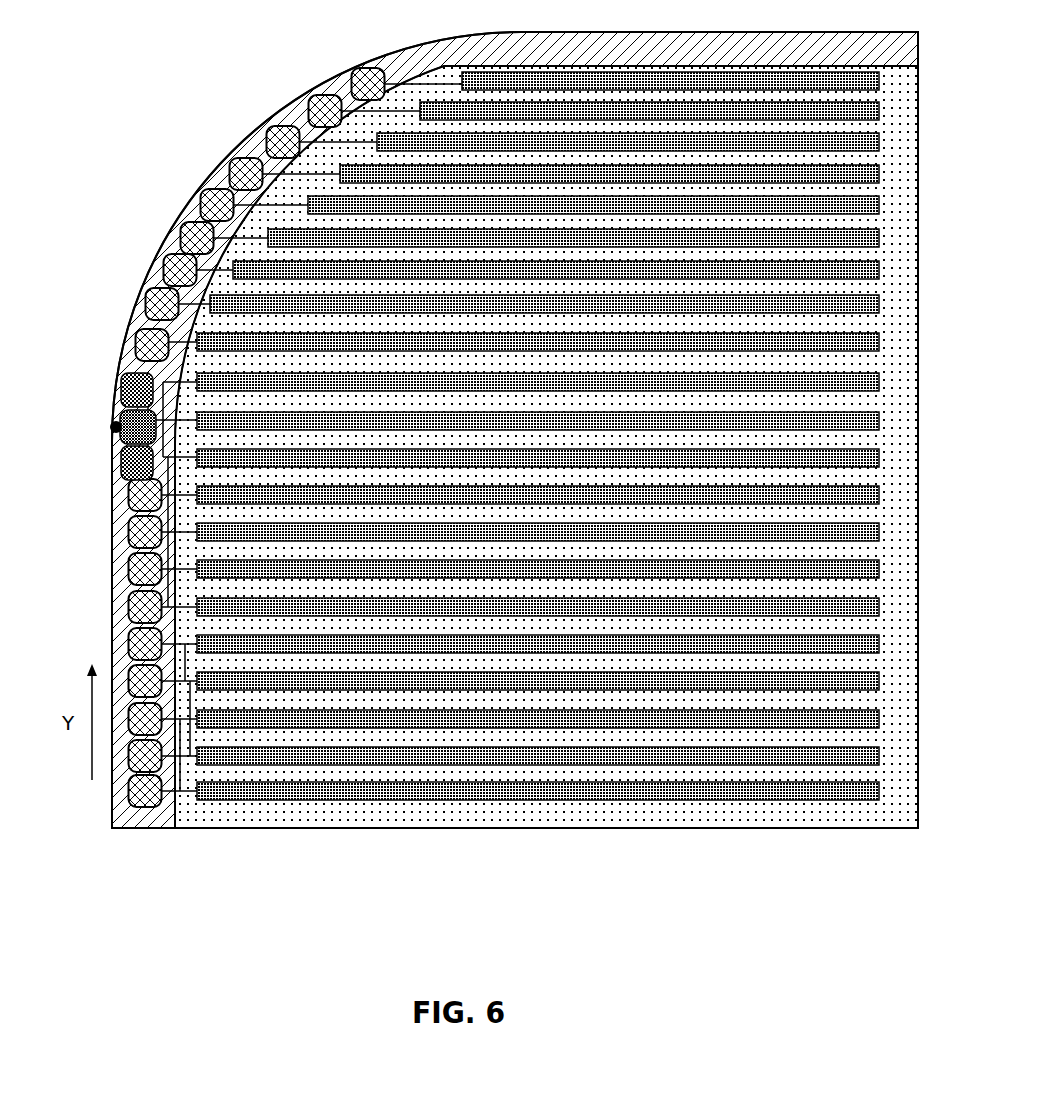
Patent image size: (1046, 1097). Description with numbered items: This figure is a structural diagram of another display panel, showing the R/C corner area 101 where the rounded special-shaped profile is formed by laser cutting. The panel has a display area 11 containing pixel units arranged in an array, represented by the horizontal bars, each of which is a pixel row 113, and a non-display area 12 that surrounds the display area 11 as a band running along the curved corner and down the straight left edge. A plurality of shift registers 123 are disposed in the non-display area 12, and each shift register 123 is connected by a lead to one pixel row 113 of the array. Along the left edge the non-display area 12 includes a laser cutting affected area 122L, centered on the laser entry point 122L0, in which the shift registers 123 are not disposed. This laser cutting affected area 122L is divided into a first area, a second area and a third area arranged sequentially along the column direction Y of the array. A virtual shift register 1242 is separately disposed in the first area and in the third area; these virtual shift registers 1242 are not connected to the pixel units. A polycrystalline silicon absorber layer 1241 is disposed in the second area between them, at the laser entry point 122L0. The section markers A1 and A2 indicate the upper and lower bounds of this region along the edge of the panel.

The R/C corner area 101 is at (153, 120).
The display area 11 is at (370, 828).
The non-display area 12 is at (162, 828).
The pixel row 113 is at (470, 800).
The shift register 123 is at (135, 828).
The polycrystalline silicon absorber layer 1241 is at (115, 410).
The virtual shift register 1242 is at (115, 483).
The laser cutting affected area 122L is at (115, 467).
The laser entry point 122L0 is at (112, 427).
The section line A1 is at (127, 331).
The section line A2 is at (109, 519).